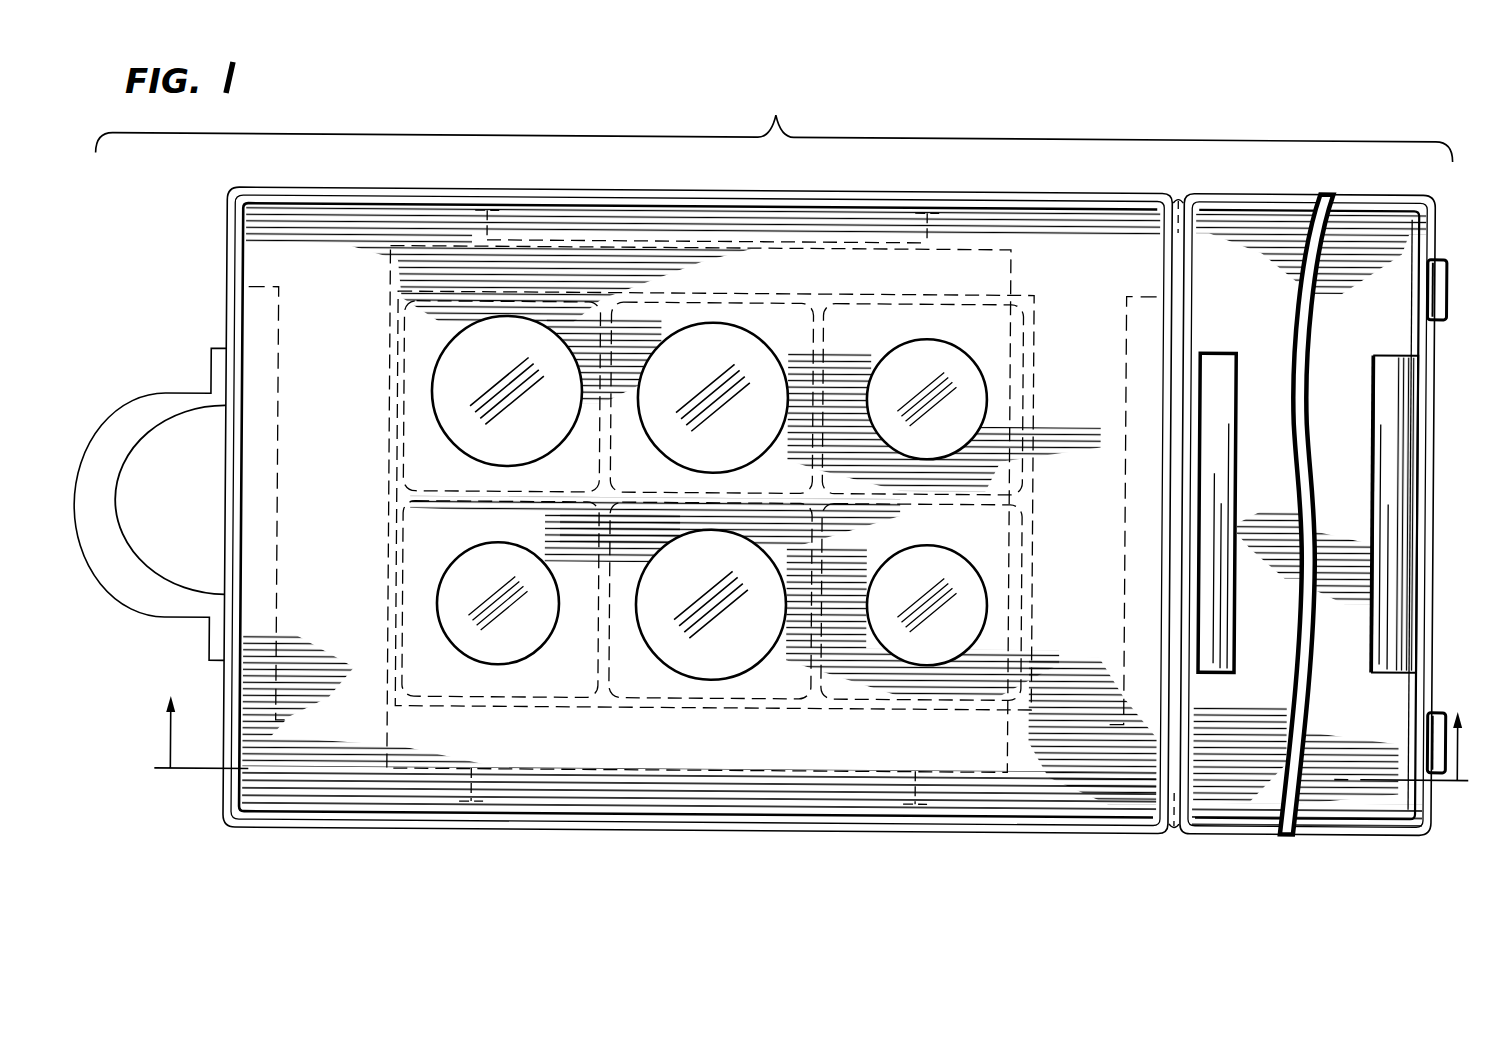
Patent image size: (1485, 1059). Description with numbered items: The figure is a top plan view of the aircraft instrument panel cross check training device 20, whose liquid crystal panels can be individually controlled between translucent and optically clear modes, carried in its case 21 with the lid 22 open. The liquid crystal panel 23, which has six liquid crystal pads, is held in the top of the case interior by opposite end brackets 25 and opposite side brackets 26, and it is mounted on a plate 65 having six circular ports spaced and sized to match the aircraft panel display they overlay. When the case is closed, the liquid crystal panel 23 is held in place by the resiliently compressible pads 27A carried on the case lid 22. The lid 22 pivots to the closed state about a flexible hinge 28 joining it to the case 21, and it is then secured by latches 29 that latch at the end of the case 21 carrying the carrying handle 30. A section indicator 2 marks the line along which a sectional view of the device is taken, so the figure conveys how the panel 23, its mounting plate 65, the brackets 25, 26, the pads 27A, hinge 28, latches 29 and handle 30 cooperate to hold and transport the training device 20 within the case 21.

The section line 2- 2 is at (811, 763).
The aircraft instrument panel cross check training device 20 is at (374, 344).
The case 21 is at (225, 307).
The lid 22 is at (1250, 191).
The liquid crystal panel 23 is at (378, 562).
The opposite end brackets 25 is at (265, 291).
The opposite side brackets 26 is at (930, 232).
The resiliently compressible pads 27A is at (1373, 350).
The flexible hinge 28 is at (1177, 797).
The latches 29 is at (1430, 279).
The carrying handle 30 is at (157, 398).
The plate 65 is at (603, 213).